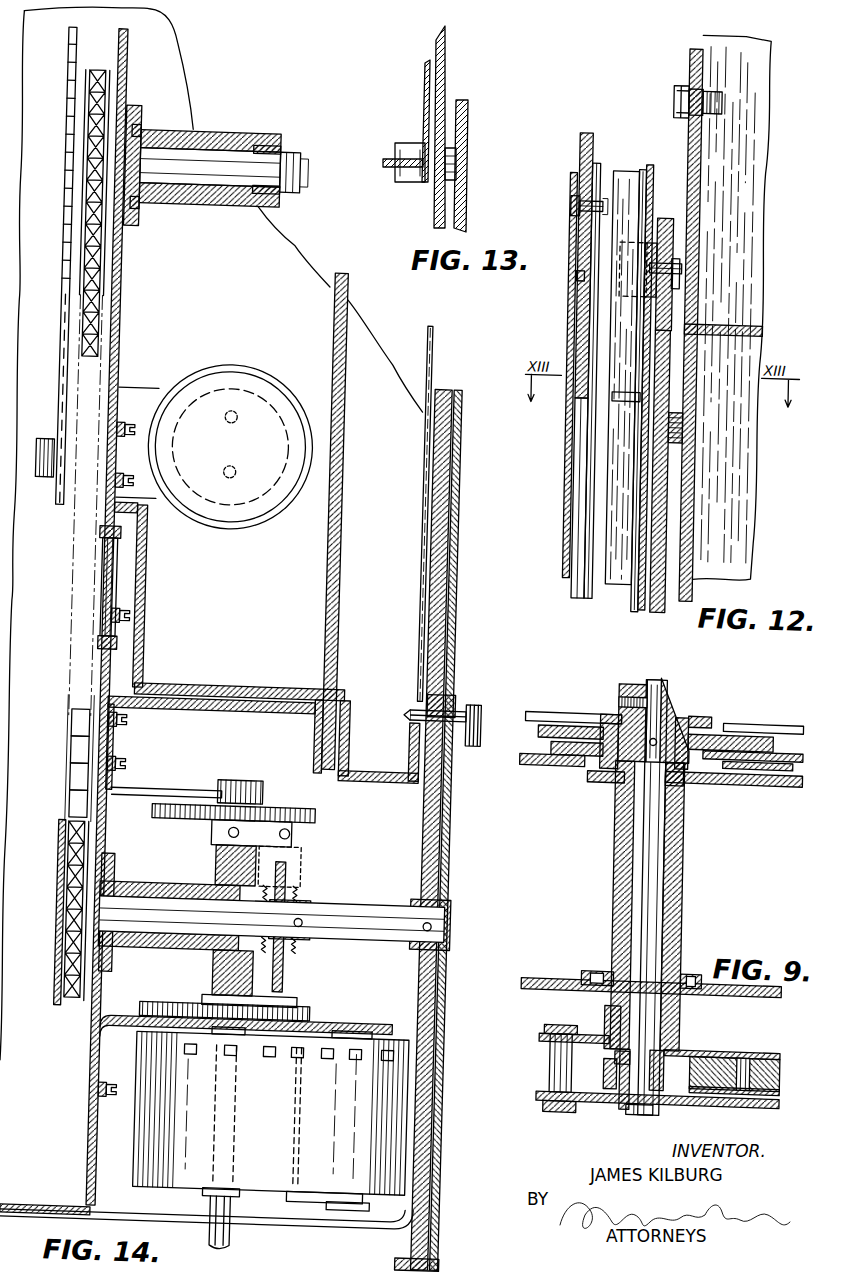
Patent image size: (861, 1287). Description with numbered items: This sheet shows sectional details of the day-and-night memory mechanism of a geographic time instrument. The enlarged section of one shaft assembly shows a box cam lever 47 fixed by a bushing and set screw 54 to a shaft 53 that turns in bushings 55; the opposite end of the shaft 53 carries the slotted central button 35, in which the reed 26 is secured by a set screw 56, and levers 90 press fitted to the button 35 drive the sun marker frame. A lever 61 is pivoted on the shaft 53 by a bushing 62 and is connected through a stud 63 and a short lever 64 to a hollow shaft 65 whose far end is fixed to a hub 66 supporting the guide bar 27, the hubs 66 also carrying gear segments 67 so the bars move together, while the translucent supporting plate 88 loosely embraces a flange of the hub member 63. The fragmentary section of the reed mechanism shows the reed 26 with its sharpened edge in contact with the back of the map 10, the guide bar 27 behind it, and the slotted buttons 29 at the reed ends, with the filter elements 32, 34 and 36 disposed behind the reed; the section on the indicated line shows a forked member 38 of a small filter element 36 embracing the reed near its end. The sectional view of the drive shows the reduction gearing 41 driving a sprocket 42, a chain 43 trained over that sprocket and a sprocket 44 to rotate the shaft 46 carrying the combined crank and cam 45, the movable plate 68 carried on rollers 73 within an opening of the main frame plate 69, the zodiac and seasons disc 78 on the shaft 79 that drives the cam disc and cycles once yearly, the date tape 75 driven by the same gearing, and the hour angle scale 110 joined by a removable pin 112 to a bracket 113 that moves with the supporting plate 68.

In FIG. 12, the map 10 is at (592, 598).
In FIG. 13, the reed 26 is at (385, 166).
In FIG. 12, the reed 26 is at (631, 176).
In FIG. 9, the reed 26 is at (652, 680).
In FIG. 12, the guide bar 27 is at (672, 221).
In FIG. 9, the guide bar 27 is at (757, 737).
In FIG. 12, the slotted button 29 is at (678, 256).
In FIG. 12, the filter element 32 is at (636, 600).
In FIG. 12, the filter element 34 is at (646, 602).
In FIG. 9, the central button 35 is at (667, 703).
In FIG. 13, the filter element 36 is at (425, 92).
In FIG. 12, the filter element 36 is at (662, 600).
In FIG. 13, the forked member 38 is at (410, 143).
In FIG. 14, the reduction gearing 41 is at (312, 836).
In FIG. 14, the sprocket 42 is at (68, 882).
In FIG. 14, the chain 43 is at (74, 803).
In FIG. 14, the sprocket 44 is at (76, 78).
In FIG. 14, the combined crank and cam 45 is at (55, 231).
In FIG. 14, the shaft 46 is at (185, 152).
In FIG. 9, the box cam lever 47 is at (775, 1046).
In FIG. 9, the shaft 53 is at (650, 956).
In FIG. 9, the bushing and set screw 54 is at (619, 1063).
In FIG. 9, the bushing 55 is at (670, 784).
In FIG. 9, the set screw 56 is at (617, 706).
In FIG. 9, the lever 61 is at (735, 1105).
In FIG. 9, the bushing 62 is at (632, 1113).
In FIG. 9, the stud 63 is at (554, 1086).
In FIG. 9, the short lever 64 is at (598, 1037).
In FIG. 9, the hollow shaft 65 is at (668, 889).
In FIG. 9, the hub 66 is at (620, 784).
In FIG. 9, the gear segment 67 is at (783, 783).
In FIG. 14, the movable plate 68 is at (112, 358).
In FIG. 14, the main frame plate 69 is at (104, 1030).
In FIG. 14, the roller 73 is at (114, 560).
In FIG. 14, the date tape 75 is at (270, 1139).
In FIG. 14, the disc 78 is at (455, 868).
In FIG. 14, the shaft 79 is at (344, 900).
In FIG. 9, the supporting plate 88 is at (548, 753).
In FIG. 9, the lever 90 is at (715, 724).
In FIG. 14, the hour angle scale 110 is at (456, 688).
In FIG. 14, the pin 112 is at (470, 704).
In FIG. 14, the bracket 113 is at (356, 706).